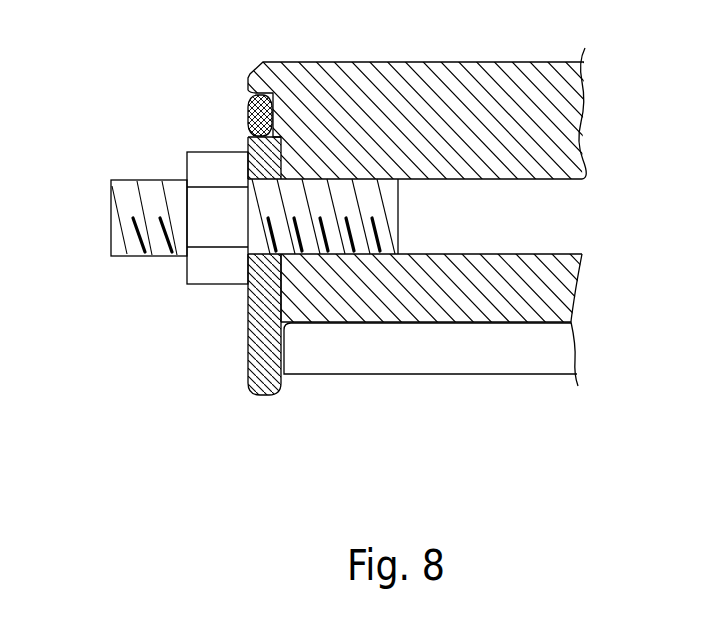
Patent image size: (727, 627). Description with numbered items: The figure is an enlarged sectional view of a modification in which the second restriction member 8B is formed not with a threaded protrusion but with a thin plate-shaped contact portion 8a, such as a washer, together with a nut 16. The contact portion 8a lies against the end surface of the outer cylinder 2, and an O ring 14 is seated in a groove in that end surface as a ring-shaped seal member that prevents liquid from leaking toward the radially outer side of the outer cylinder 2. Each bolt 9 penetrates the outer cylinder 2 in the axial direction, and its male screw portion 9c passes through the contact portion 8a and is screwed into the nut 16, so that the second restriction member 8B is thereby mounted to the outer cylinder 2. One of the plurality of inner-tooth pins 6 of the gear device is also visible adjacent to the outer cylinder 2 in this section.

The outer cylinder 2 is at (348, 62).
The bolt 9 is at (561, 212).
The male screw portion 9c is at (111, 205).
The O ring 14 is at (247, 110).
The nut 16 is at (219, 273).
The contact portion 8a is at (248, 370).
The second restriction member 8B is at (222, 321).
The inner-tooth pin 6 is at (458, 358).